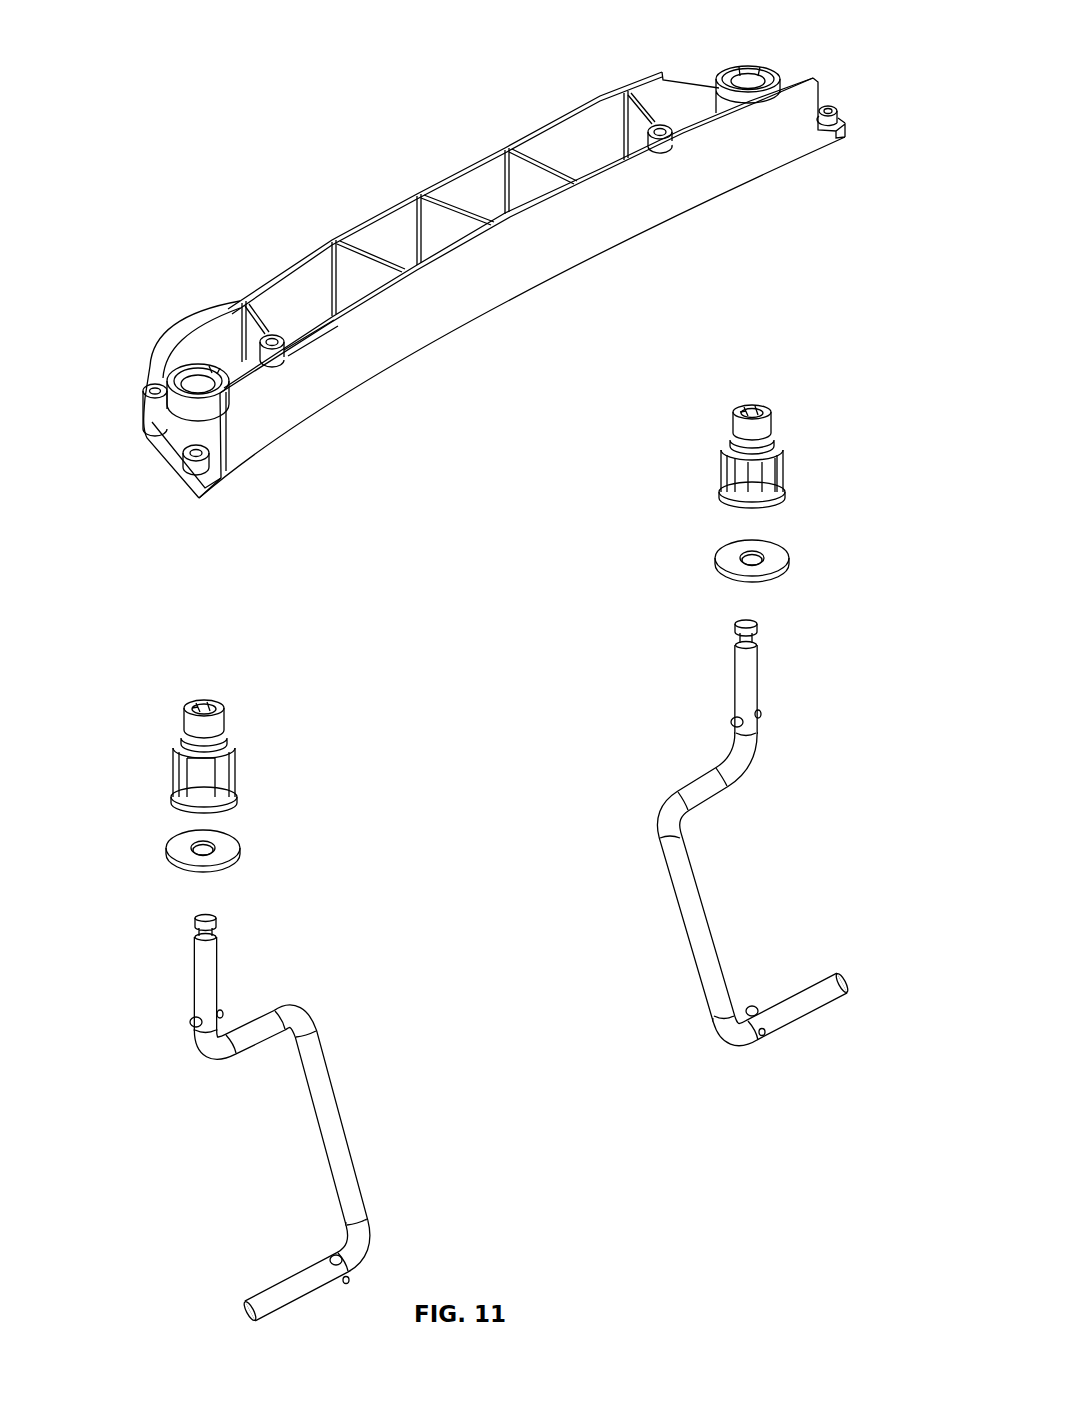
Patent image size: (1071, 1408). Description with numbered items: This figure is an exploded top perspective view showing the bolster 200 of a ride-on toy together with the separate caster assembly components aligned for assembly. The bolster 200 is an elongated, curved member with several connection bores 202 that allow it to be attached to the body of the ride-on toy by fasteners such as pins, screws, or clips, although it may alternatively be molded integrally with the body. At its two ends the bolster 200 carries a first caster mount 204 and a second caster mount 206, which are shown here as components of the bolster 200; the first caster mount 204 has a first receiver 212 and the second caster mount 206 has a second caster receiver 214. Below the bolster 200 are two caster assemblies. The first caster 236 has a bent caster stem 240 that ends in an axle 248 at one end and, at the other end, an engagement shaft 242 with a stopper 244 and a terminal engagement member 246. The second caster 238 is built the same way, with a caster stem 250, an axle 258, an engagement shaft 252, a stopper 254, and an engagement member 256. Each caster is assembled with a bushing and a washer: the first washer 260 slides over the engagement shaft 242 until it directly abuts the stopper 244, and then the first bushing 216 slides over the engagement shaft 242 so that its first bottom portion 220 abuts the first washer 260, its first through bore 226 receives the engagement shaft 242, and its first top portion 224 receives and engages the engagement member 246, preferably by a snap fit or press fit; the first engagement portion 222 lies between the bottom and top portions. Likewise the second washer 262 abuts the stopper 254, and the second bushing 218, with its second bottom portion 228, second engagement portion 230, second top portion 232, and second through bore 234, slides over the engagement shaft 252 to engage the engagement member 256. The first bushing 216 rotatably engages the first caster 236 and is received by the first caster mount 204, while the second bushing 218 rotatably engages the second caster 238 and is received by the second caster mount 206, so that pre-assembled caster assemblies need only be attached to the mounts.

The bolster 200 is at (398, 182).
The connection bore 202 is at (838, 109).
The first caster mount 204 is at (155, 445).
The second caster mount 206 is at (774, 80).
The first receiver 212 is at (193, 377).
The second caster receiver 214 is at (741, 74).
The first bushing 216 is at (187, 733).
The second bushing 218 is at (734, 433).
The first bottom portion 220 is at (240, 792).
The first engagement portion 222 is at (233, 761).
The first top portion 224 is at (213, 703).
The first through bore 226 is at (199, 703).
The second bottom portion 228 is at (790, 497).
The second engagement portion 230 is at (783, 469).
The second top portion 232 is at (762, 408).
The second through bore 234 is at (748, 409).
The first caster 236 is at (290, 1106).
The second caster 238 is at (717, 835).
The caster stem 240 is at (293, 1006).
The engagement shaft 242 is at (217, 977).
The stopper 244 is at (191, 1025).
The engagement member 246 is at (204, 915).
The axle 248 is at (277, 1290).
The caster stem 250 is at (660, 801).
The engagement shaft 252 is at (759, 681).
The stopper 254 is at (764, 718).
The engagement member 256 is at (753, 621).
The axle 258 is at (823, 1019).
The first washer 260 is at (230, 846).
The second washer 262 is at (728, 561).